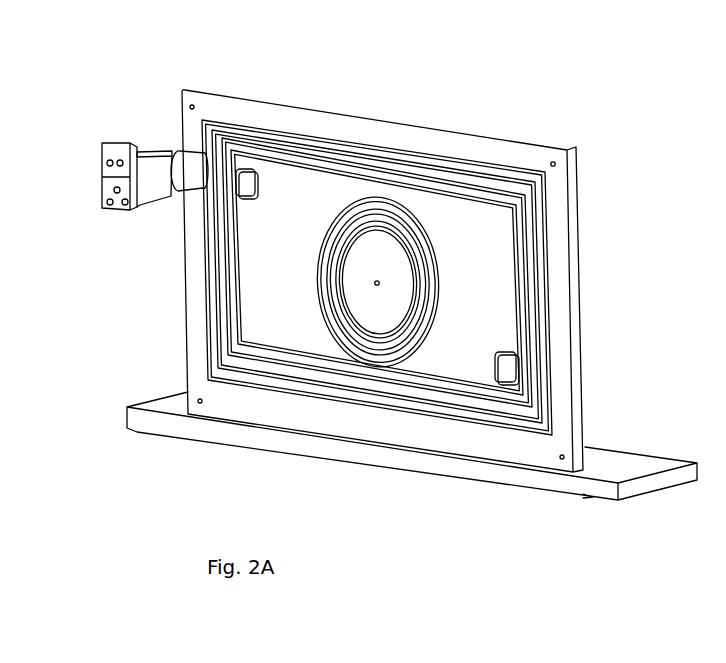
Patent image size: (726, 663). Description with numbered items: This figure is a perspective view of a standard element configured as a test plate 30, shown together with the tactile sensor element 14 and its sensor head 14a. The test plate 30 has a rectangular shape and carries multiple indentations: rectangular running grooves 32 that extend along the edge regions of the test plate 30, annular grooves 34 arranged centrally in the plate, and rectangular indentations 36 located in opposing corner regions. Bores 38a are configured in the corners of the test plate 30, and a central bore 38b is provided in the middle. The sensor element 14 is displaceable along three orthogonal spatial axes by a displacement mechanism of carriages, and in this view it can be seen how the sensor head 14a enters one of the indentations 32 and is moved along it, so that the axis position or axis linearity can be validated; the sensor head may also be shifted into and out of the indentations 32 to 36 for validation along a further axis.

The tactile sensor element 14 is at (178, 158).
The sensor head 14a is at (208, 160).
The test plate 30 is at (568, 279).
The rectangular running grooves 32 is at (355, 176).
The annular grooves 34 is at (428, 240).
The rectangular indentations 36 is at (250, 181).
The bores 38a is at (556, 162).
The central bore 38b is at (382, 282).